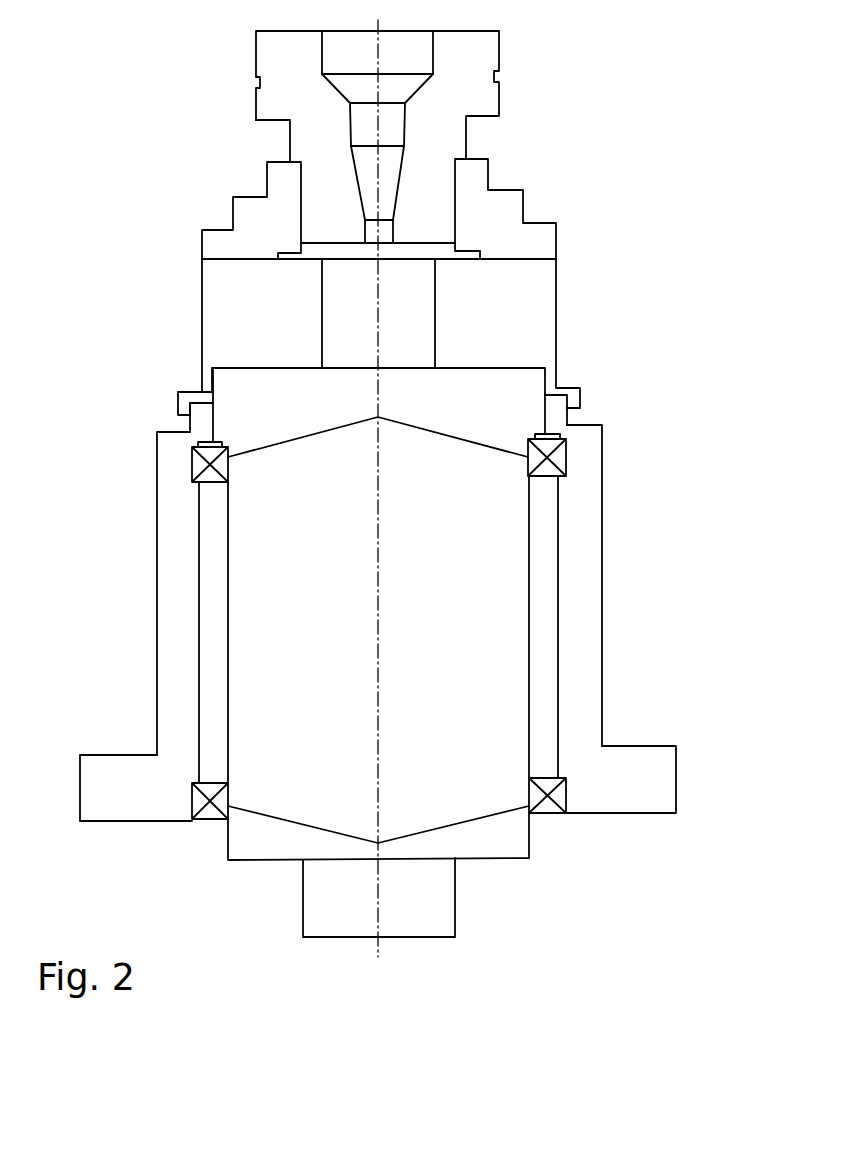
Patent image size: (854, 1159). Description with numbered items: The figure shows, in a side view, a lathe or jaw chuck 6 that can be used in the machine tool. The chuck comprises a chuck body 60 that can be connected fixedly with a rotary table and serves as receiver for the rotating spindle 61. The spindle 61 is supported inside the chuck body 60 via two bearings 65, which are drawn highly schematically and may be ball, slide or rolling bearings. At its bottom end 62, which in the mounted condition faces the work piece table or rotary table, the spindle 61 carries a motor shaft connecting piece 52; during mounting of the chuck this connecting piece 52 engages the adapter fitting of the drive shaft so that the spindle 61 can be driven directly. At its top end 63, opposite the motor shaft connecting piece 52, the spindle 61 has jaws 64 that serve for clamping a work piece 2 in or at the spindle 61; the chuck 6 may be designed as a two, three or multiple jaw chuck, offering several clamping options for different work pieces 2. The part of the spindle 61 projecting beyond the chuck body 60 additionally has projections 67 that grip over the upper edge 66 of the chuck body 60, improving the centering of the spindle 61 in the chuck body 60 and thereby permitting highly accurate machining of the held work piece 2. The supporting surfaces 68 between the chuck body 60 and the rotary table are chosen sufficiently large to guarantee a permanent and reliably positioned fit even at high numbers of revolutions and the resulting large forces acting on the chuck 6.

The work piece 2 is at (278, 55).
The lathe or jaw chuck 6 is at (621, 273).
The motor shaft connecting piece 52 is at (392, 916).
The chuck body 60 is at (577, 623).
The spindle 61 is at (517, 390).
The bottom end 62 is at (512, 860).
The top end 63 is at (533, 255).
The jaws 64 is at (524, 207).
The bearings 65 is at (193, 460).
The upper edge 66 is at (578, 412).
The projections 67 is at (571, 383).
The supporting surfaces 68 is at (653, 815).